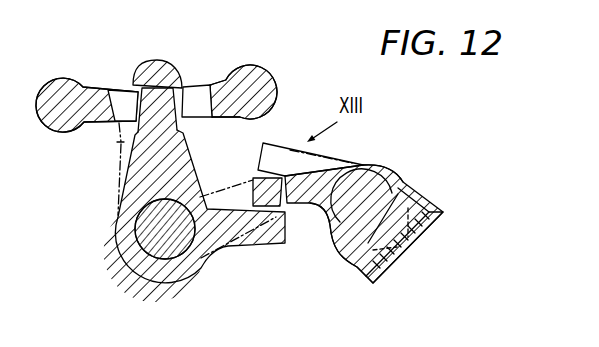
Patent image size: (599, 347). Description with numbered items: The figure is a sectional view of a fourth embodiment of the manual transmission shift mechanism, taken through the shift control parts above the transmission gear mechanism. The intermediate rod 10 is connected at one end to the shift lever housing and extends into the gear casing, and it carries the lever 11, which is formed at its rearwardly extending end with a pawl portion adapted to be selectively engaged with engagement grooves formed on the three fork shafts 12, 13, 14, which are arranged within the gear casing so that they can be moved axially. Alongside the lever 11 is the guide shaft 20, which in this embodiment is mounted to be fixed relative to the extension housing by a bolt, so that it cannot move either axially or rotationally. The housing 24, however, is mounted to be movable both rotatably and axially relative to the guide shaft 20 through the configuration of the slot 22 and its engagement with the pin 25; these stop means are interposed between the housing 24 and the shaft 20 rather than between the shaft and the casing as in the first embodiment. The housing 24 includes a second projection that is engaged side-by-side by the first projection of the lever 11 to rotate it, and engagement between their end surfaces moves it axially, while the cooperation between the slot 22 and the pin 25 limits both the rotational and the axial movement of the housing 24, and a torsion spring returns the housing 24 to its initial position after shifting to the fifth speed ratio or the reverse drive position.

The intermediate rod 10 is at (143, 232).
The lever 11 is at (162, 277).
The fork shaft 12 is at (247, 65).
The fork shaft 13 is at (157, 60).
The fork shaft 14 is at (66, 78).
The guide shaft 20 is at (390, 190).
The slot 22 is at (357, 259).
The housing 24 is at (388, 166).
The pin 25 is at (367, 263).